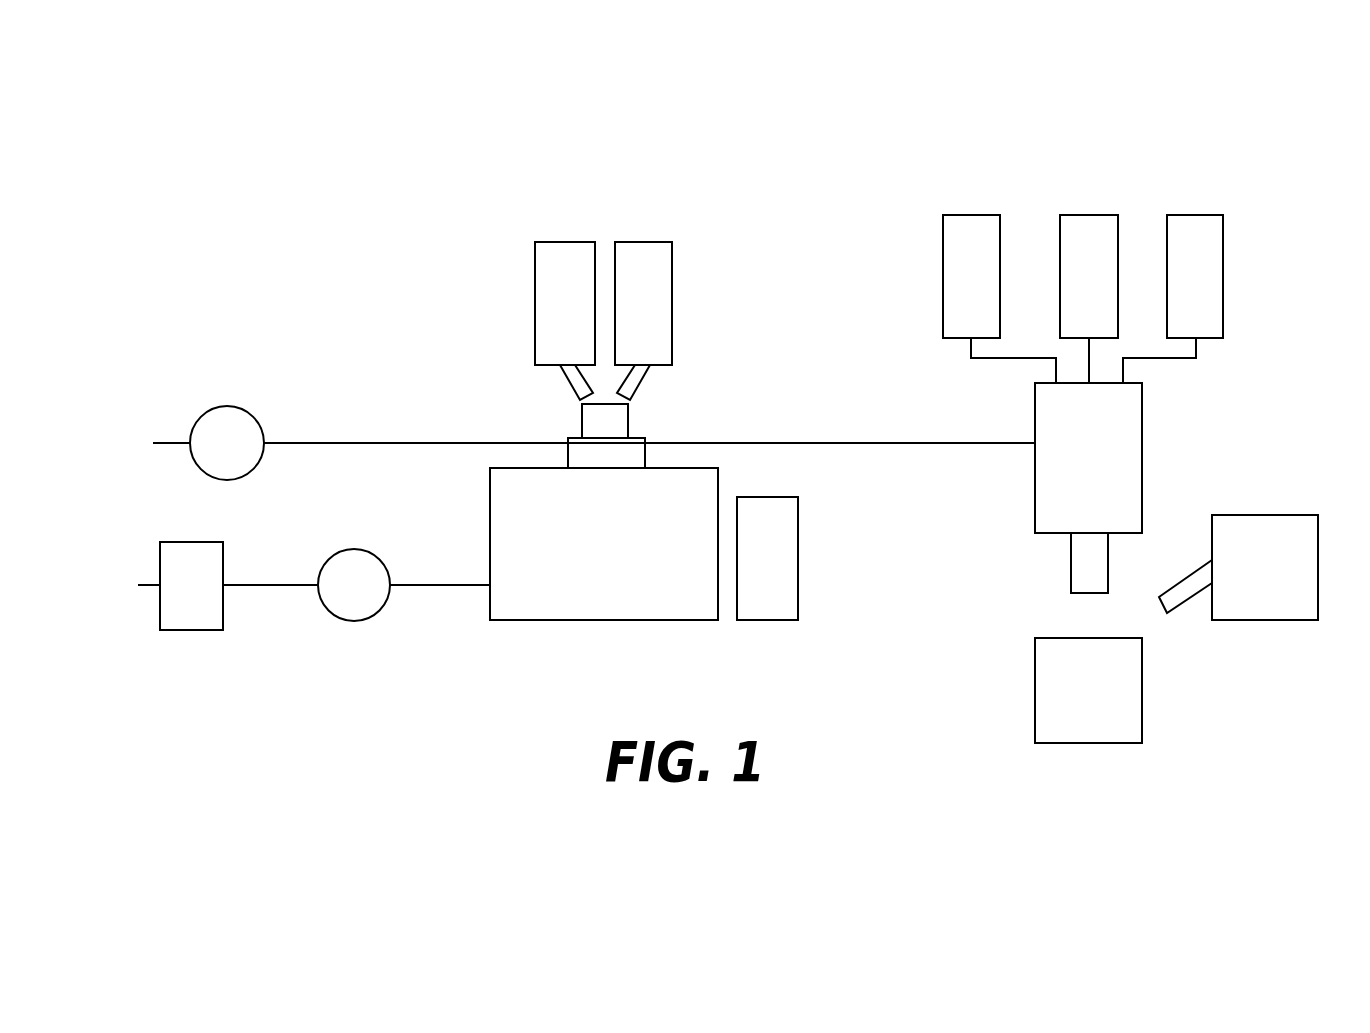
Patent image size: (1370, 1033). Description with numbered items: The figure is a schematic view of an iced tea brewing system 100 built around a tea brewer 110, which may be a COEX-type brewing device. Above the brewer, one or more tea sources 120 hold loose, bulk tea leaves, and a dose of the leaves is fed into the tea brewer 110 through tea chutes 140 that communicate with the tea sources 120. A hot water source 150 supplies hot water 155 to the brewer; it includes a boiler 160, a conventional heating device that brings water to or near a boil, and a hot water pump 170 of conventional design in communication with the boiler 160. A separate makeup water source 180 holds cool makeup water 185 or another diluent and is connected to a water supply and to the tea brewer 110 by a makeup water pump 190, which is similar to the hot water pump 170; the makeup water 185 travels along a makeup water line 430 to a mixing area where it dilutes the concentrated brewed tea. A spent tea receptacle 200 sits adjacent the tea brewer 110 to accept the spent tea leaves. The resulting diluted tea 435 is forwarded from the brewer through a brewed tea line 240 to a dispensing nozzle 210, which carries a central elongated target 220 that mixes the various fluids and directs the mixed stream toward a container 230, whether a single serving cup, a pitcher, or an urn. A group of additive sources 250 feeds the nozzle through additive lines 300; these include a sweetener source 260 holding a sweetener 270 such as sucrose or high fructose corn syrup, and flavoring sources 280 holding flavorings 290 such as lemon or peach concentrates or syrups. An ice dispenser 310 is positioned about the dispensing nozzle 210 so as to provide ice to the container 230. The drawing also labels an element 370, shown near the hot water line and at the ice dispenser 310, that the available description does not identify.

The iced tea brewing system 100 is at (322, 290).
The tea brewer 110 is at (604, 512).
The tea source 120 is at (584, 316).
The tea chute 140 is at (572, 383).
The hot water source 150 is at (413, 572).
The hot water 155 is at (462, 583).
The boiler 160 is at (210, 598).
The hot water pump 170 is at (373, 598).
The makeup water source 180 is at (283, 432).
The makeup water 185 is at (378, 443).
The makeup water pump 190 is at (246, 456).
The spent tea receptacle 200 is at (786, 571).
The dispensing nozzle 210 is at (1107, 488).
The central elongated target 220 is at (1071, 575).
The container 230 is at (1107, 703).
The brewed tea line 240 is at (816, 443).
The additive source 250 is at (932, 203).
The sweetener source 260 is at (975, 213).
The sweetener 270 is at (990, 290).
The flavoring source 280 is at (1089, 213).
The flavoring 290 is at (1108, 290).
The additive line 300 is at (971, 350).
The ice dispenser 310 is at (1284, 581).
The sensor 370 is at (1300, 533).
The makeup water line 430 is at (323, 443).
The diluted tea 435 is at (886, 443).